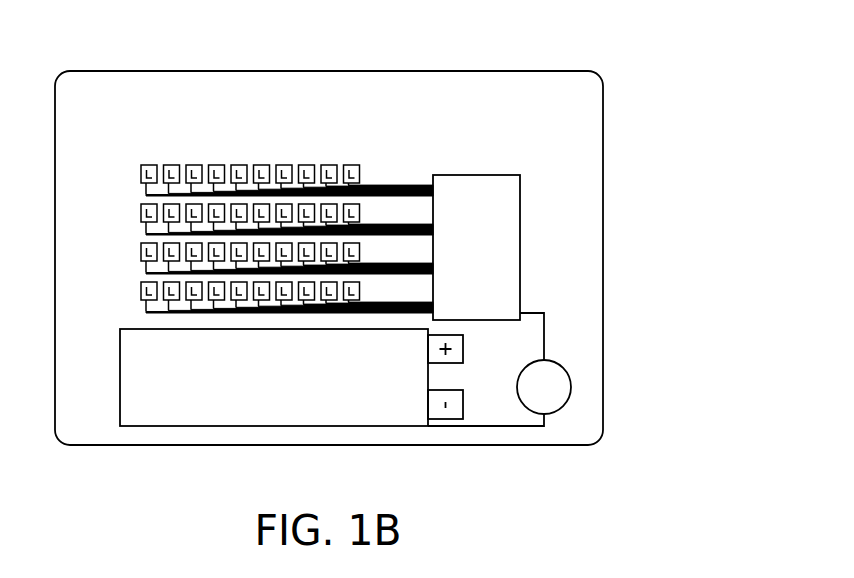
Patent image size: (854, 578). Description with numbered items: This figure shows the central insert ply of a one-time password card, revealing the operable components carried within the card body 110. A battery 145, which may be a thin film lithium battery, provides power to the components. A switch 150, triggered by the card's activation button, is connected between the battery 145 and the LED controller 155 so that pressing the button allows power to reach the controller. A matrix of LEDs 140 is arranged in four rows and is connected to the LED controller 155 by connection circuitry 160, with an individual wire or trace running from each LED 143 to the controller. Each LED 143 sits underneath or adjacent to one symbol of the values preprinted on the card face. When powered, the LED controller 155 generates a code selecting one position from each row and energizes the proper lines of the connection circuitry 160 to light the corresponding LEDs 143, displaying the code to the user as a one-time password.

The card body 110 is at (597, 148).
The LED matrix 140 is at (287, 168).
The LED 143 is at (233, 165).
The battery 145 is at (183, 390).
The switch 150 is at (560, 411).
The LED controller 155 is at (520, 243).
The connection circuitry 160 is at (391, 158).